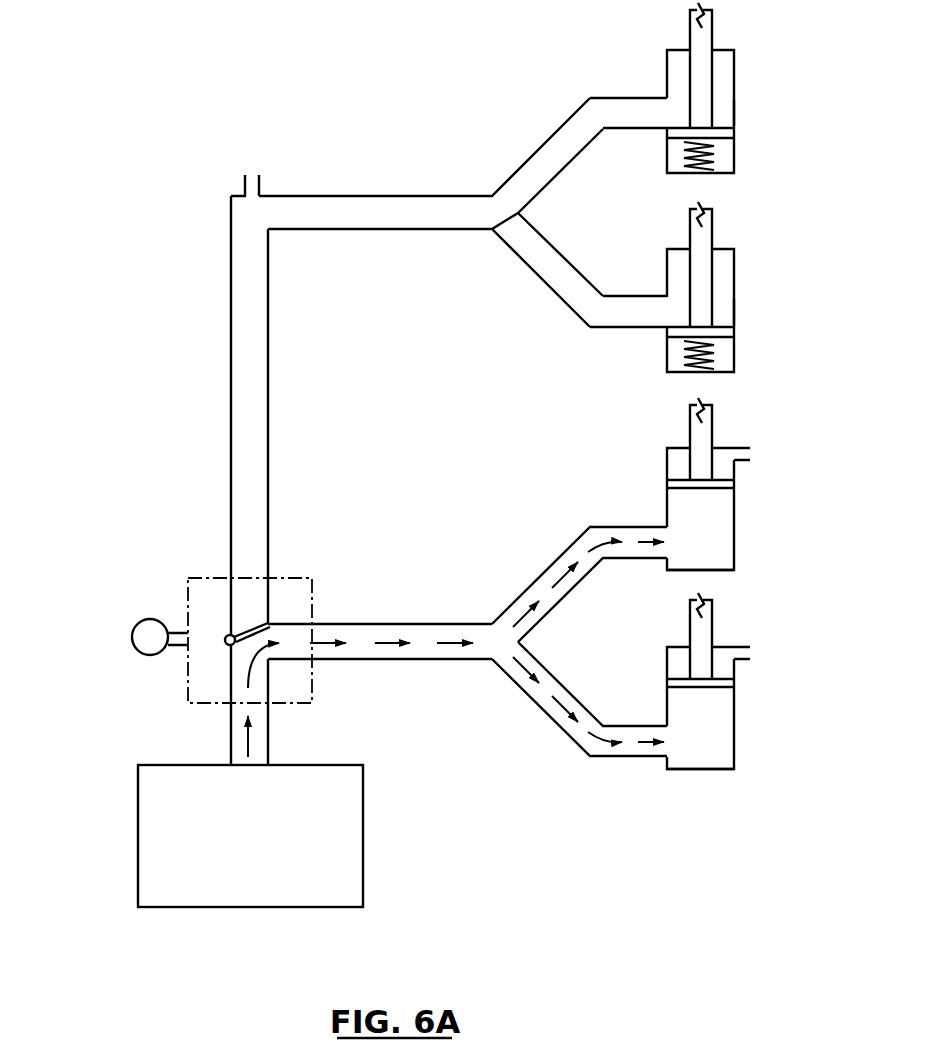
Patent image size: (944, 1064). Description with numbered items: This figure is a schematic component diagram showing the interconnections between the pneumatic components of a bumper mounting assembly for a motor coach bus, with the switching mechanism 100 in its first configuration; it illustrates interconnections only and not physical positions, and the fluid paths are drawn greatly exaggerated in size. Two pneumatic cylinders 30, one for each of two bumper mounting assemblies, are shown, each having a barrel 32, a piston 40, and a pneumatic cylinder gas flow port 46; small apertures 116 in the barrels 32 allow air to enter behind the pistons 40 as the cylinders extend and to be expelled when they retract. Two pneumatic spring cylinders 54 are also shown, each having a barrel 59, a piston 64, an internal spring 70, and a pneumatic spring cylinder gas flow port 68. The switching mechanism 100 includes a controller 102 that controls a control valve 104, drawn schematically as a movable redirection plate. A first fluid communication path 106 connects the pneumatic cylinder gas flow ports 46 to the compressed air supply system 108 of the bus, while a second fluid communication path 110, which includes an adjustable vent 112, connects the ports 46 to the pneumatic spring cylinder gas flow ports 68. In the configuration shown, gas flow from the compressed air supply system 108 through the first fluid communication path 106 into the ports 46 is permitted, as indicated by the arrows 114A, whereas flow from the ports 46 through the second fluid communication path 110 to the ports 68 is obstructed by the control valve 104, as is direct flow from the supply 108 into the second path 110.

The pneumatic cylinder 30 is at (745, 503).
The barrel 32 is at (736, 557).
The piston 40 is at (712, 418).
The pneumatic cylinder gas flow port 46 is at (664, 550).
The pneumatic spring cylinder 54 is at (742, 78).
The barrel 59 is at (736, 112).
The piston 64 is at (705, 25).
The pneumatic spring cylinder gas flow port 68 is at (668, 115).
The spring 70 is at (706, 152).
The switching mechanism 100 is at (168, 587).
The controller 102 is at (148, 655).
The control valve 104 is at (247, 612).
The first fluid communication path 106 is at (268, 720).
The compressed air supply system 108 is at (363, 817).
The second fluid communication path 110 is at (408, 193).
The adjustable vent 112 is at (259, 186).
The arrows 114A is at (387, 643).
The small apertures 116 is at (750, 453).